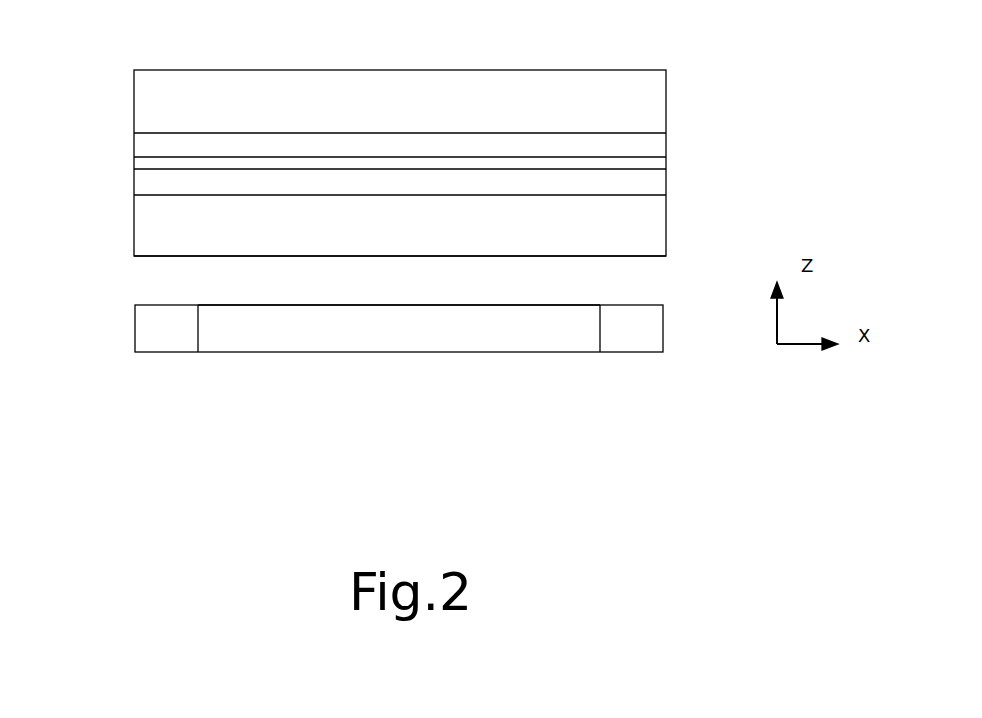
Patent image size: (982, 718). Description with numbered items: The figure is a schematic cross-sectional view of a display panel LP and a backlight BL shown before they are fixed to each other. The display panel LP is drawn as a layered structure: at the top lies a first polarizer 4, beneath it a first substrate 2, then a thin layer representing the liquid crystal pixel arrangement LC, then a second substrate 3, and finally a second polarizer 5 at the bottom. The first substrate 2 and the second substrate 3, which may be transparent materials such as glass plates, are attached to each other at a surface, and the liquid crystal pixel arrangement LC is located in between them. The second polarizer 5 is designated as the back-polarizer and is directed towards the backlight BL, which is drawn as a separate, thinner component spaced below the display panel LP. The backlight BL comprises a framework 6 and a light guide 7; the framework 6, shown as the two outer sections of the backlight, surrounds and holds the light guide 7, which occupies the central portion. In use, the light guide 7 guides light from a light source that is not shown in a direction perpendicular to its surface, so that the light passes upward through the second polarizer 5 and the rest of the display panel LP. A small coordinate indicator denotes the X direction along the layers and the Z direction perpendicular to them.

The display panel LP is at (572, 62).
The first polarizer 4 is at (408, 114).
The first substrate 2 is at (645, 145).
The liquid crystal pixel arrangement LC is at (148, 165).
The second substrate 3 is at (648, 180).
The second polarizer 5 is at (408, 233).
The backlight BL is at (579, 387).
The framework 6 is at (170, 338).
The light guide 7 is at (408, 337).